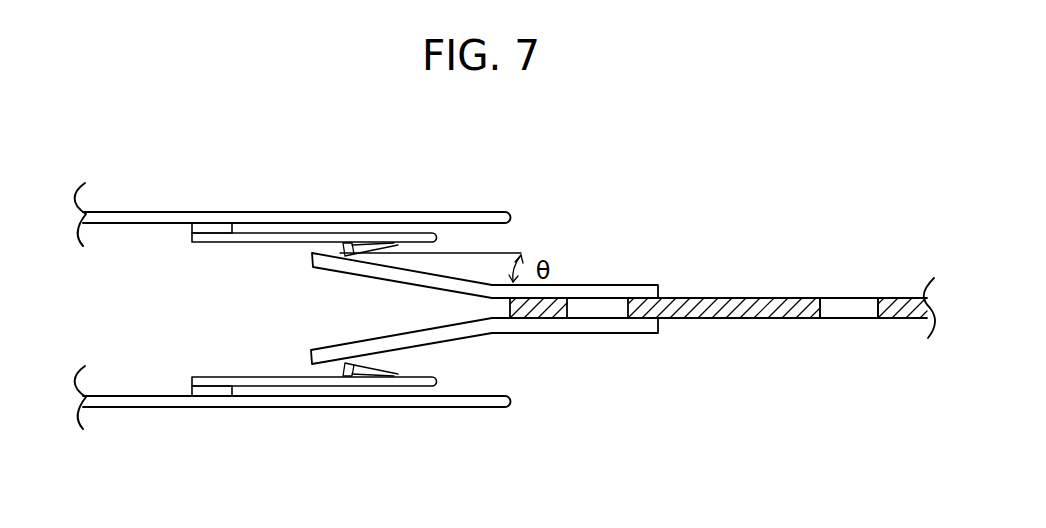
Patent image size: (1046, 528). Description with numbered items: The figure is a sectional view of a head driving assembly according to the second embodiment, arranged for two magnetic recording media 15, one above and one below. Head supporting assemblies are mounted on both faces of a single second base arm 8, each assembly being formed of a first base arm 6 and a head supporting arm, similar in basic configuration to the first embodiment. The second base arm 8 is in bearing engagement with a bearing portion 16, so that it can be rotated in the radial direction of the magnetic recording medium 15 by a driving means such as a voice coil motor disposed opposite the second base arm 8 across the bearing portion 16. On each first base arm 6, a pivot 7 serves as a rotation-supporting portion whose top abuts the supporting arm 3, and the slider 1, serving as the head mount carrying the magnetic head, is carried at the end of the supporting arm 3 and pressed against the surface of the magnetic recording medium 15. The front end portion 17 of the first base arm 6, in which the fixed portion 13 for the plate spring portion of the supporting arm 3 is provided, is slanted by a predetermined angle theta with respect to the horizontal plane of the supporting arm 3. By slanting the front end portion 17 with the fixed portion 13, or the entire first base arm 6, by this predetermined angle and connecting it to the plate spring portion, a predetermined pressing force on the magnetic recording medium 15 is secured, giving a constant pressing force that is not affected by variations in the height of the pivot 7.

The slider 1 is at (213, 228).
The supporting arm 3 is at (292, 238).
The first base arm 6 is at (587, 292).
The pivot 7 is at (348, 253).
The second base arm 8 is at (737, 307).
The fixed portion 13 is at (333, 366).
The magnetic recording medium 15 is at (143, 218).
The bearing portion 16 is at (850, 305).
The front end portion 17 is at (403, 340).